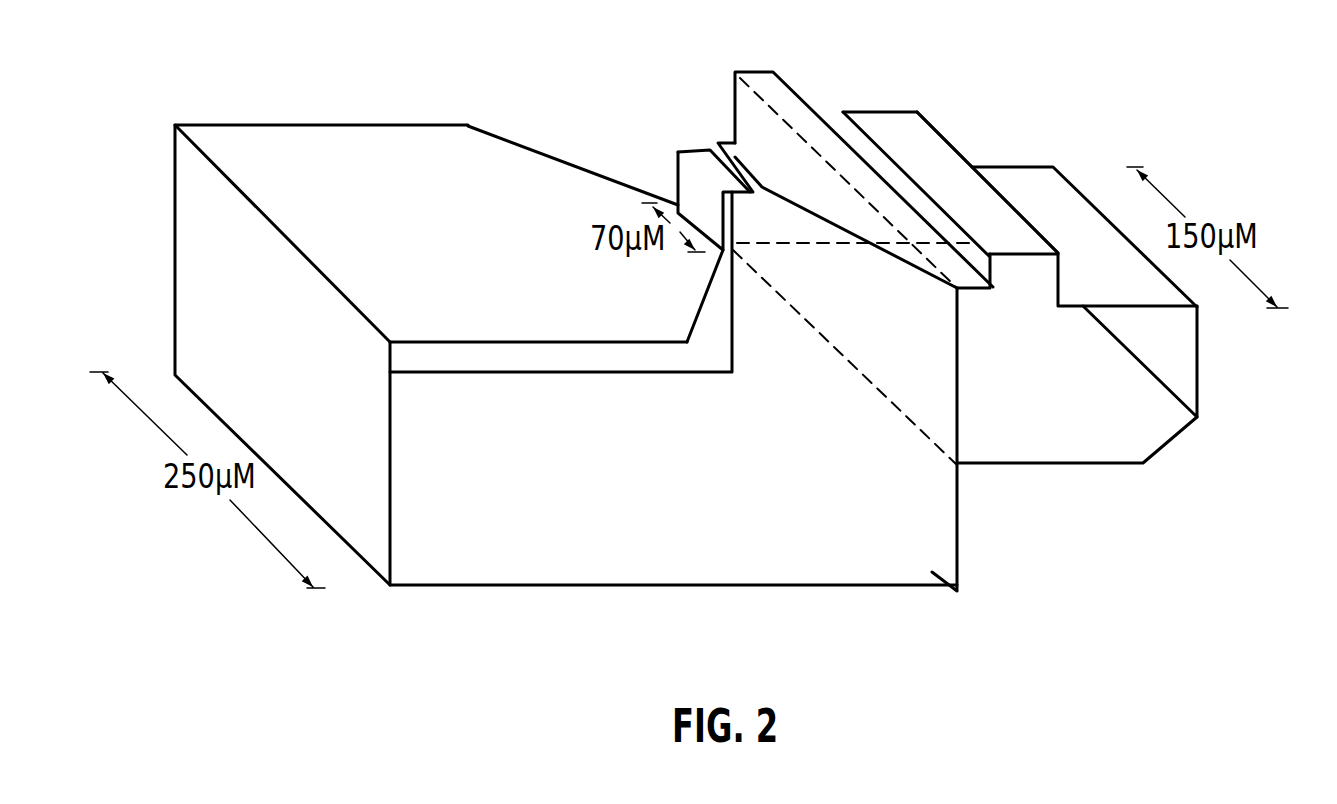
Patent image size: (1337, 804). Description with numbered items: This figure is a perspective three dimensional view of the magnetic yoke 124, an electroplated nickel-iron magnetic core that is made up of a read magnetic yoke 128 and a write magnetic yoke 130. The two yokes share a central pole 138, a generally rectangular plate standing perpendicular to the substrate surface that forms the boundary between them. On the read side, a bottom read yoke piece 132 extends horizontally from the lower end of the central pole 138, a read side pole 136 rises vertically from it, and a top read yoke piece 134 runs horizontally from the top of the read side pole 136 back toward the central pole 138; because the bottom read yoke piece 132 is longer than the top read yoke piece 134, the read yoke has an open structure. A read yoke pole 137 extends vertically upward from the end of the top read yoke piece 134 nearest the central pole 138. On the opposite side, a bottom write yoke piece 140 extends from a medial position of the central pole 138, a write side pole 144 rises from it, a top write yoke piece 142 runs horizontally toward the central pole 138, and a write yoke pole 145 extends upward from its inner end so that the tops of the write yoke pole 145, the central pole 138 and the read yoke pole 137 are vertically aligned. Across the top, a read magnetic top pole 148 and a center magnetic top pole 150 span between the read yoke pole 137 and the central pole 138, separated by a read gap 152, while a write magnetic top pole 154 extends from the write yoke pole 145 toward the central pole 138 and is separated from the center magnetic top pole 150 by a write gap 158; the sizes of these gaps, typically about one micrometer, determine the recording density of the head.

The magnetic yoke 124 is at (957, 593).
The read magnetic yoke 128 is at (175, 122).
The write magnetic yoke 130 is at (917, 112).
The bottom read yoke piece 132 is at (613, 593).
The top read yoke piece 134 is at (428, 125).
The read side pole 136 is at (173, 225).
The read yoke pole 137 is at (673, 163).
The central pole 138 is at (973, 297).
The bottom write yoke piece 140 is at (1143, 463).
The top write yoke piece 142 is at (1023, 166).
The write side pole 144 is at (1197, 357).
The write yoke pole 145 is at (947, 140).
The read magnetic top pole 148 is at (682, 147).
The center magnetic top pole 150 is at (888, 258).
The read gap 152 is at (768, 190).
The write magnetic top pole 154 is at (893, 107).
The write gap 158 is at (978, 262).